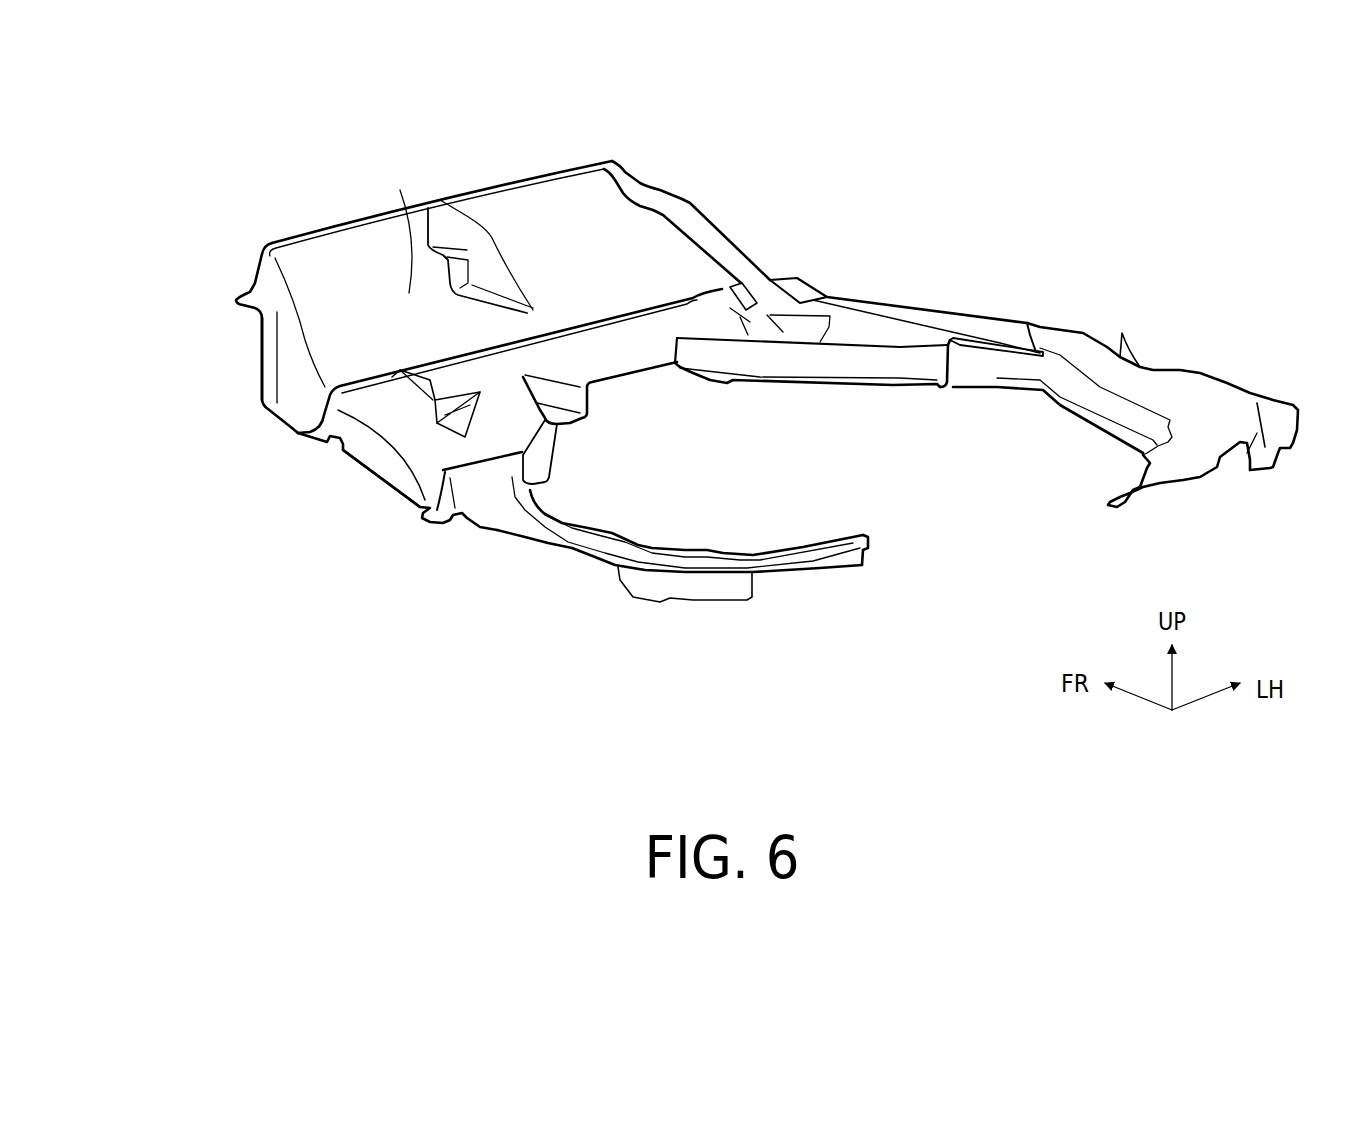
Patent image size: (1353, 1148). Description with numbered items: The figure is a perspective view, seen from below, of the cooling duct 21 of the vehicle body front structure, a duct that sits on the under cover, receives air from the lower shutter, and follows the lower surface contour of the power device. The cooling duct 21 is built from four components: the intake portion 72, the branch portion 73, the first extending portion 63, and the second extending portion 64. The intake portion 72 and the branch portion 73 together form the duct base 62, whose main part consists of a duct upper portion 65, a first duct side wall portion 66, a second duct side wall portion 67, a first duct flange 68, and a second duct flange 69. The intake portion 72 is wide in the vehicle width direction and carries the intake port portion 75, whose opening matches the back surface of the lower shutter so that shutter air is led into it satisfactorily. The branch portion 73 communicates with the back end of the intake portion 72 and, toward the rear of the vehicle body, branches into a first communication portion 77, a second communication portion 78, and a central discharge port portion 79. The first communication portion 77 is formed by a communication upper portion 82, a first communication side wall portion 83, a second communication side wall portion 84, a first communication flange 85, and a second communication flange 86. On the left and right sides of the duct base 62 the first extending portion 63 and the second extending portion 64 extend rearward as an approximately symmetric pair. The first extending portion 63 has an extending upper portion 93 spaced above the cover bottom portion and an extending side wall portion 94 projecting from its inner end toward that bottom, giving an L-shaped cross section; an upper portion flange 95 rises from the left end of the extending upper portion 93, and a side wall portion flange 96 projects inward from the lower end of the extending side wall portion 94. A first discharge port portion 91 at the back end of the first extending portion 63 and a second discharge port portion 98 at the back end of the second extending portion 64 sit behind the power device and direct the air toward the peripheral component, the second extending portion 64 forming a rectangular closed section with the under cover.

The cooling duct 21 is at (726, 382).
The duct base 62 is at (252, 390).
The first extending portion 63 is at (1125, 431).
The second extending portion 64 is at (708, 561).
The duct upper portion 65 is at (459, 235).
The first duct side wall portion 66 is at (640, 188).
The second duct side wall portion 67 is at (293, 400).
The first duct flange 68 is at (708, 242).
The second duct flange 69 is at (270, 340).
The intake portion 72 is at (490, 296).
The branch portion 73 is at (338, 482).
The intake port portion 75 is at (510, 183).
The first communication portion 77 is at (905, 285).
The second communication portion 78 is at (400, 488).
The central discharge port portion 79 is at (623, 372).
The communication upper portion 82 is at (858, 332).
The first communication side wall portion 83 is at (967, 323).
The second communication side wall portion 84 is at (859, 357).
The first communication flange 85 is at (997, 337).
The second communication flange 86 is at (813, 387).
The first discharge port portion 91 is at (1183, 473).
The extending upper portion 93 is at (1197, 410).
The extending side wall portion 94 is at (1103, 408).
The upper portion flange 95 is at (1150, 366).
The side wall portion flange 96 is at (1117, 432).
The second discharge port portion 98 is at (870, 553).